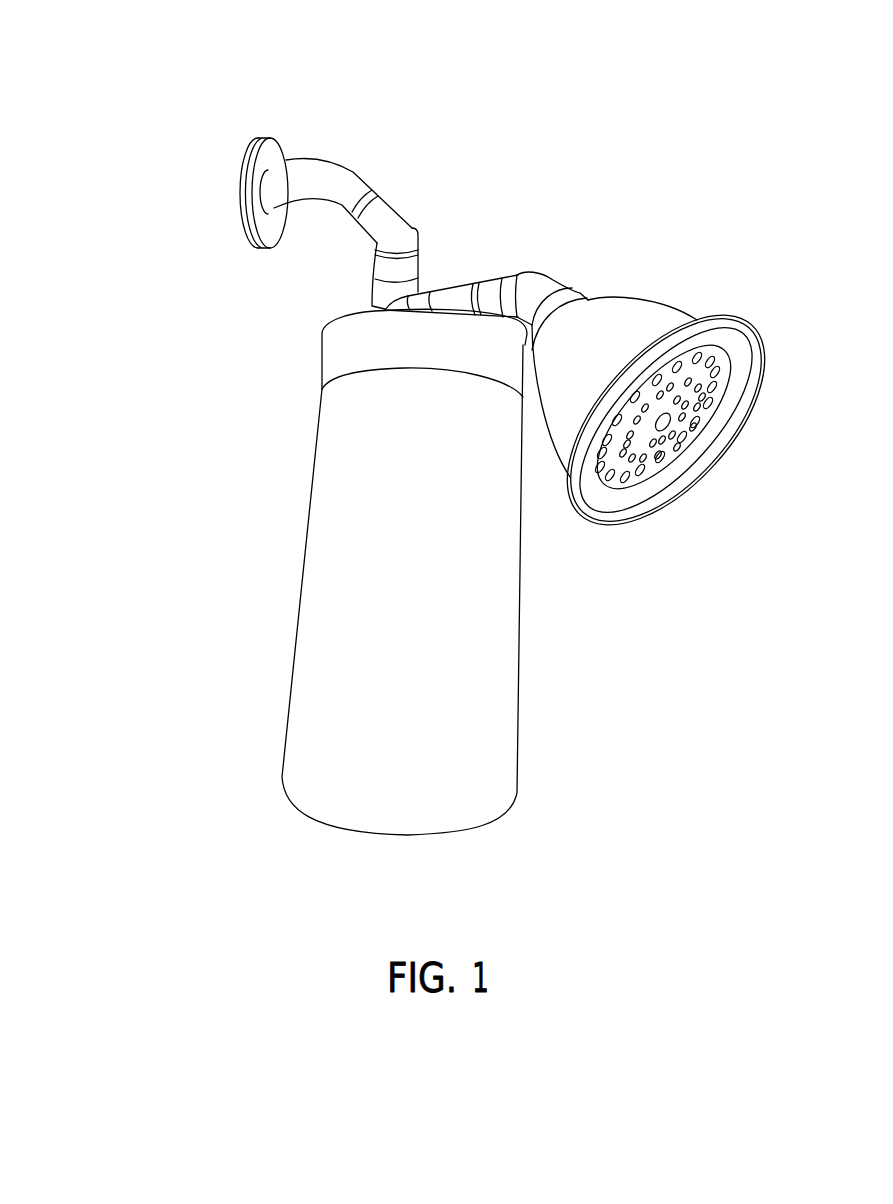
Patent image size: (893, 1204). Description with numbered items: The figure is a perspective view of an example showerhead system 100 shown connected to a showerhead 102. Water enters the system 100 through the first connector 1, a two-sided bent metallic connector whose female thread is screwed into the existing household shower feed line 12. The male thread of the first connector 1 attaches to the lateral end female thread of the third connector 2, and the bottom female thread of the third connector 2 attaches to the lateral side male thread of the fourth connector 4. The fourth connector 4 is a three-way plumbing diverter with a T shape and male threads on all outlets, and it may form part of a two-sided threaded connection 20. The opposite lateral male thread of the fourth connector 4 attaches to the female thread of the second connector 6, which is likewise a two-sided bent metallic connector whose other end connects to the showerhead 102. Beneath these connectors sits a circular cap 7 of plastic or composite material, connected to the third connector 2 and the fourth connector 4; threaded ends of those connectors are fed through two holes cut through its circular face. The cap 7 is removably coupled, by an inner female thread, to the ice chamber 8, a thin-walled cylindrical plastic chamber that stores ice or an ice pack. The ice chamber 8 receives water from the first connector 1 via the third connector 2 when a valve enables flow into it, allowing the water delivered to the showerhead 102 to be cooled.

The showerhead system 100 is at (162, 63).
The household shower feed line 12 is at (312, 168).
The first connector 1 is at (413, 233).
The third connector 2 is at (397, 268).
The two-sided threaded connection 20 is at (502, 199).
The cap 7 is at (325, 372).
The ice chamber 8 is at (477, 612).
The fourth connector 4 is at (455, 285).
The second connector 6 is at (518, 280).
The showerhead 102 is at (648, 312).